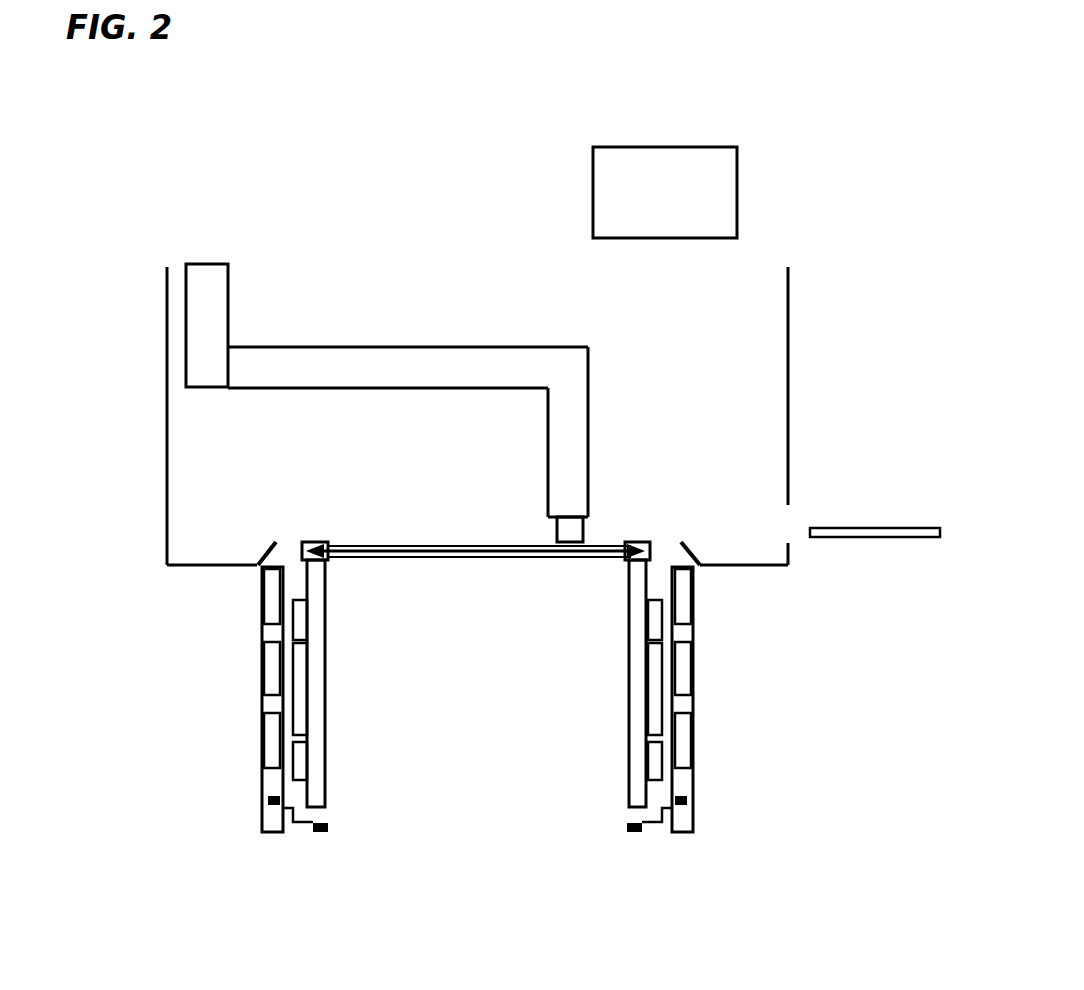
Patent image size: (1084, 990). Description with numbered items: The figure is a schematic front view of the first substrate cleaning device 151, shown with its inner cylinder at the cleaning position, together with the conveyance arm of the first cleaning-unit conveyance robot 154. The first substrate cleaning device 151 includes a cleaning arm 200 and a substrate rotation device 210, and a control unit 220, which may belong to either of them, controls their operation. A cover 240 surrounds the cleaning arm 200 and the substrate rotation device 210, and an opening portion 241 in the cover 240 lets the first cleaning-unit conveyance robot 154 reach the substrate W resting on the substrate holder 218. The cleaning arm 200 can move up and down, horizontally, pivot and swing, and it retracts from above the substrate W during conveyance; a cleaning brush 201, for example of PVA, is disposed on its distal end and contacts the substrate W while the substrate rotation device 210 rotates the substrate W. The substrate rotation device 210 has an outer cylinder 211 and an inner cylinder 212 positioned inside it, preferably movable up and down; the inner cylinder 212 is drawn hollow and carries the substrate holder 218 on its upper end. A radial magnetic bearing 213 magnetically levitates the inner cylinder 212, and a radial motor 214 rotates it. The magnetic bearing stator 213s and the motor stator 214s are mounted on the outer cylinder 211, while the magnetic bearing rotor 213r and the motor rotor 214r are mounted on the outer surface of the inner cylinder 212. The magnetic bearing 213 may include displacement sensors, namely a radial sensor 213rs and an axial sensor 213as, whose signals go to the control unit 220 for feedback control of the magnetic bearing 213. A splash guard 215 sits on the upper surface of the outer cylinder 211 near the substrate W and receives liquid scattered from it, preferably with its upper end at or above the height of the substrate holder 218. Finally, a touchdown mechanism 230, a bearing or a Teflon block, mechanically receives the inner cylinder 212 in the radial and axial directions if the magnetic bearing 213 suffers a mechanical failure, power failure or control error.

The first substrate cleaning device 151 is at (253, 200).
The control unit 220 is at (665, 192).
The cleaning arm 200 is at (417, 345).
The cleaning brush 201 is at (575, 530).
The cover 240 is at (789, 345).
The opening portion 241 is at (798, 520).
The first cleaning-unit conveyance robot 154 is at (857, 525).
The splash guard 215 is at (267, 546).
The substrate holder 218 is at (315, 540).
The substrate W is at (453, 543).
The substrate rotation device 210 is at (481, 707).
The outer cylinder 211 is at (695, 817).
The inner cylinder 212 is at (327, 720).
The magnetic bearing 213 is at (193, 757).
The magnetic bearing stator 213s is at (268, 600).
The magnetic bearing rotor 213r is at (298, 623).
The radial sensor 213rs is at (275, 807).
The axial sensor 213as is at (325, 830).
The motor 214 is at (752, 732).
The motor stator 214s is at (683, 670).
The motor rotor 214r is at (653, 688).
The touchdown mechanism 230 is at (660, 827).